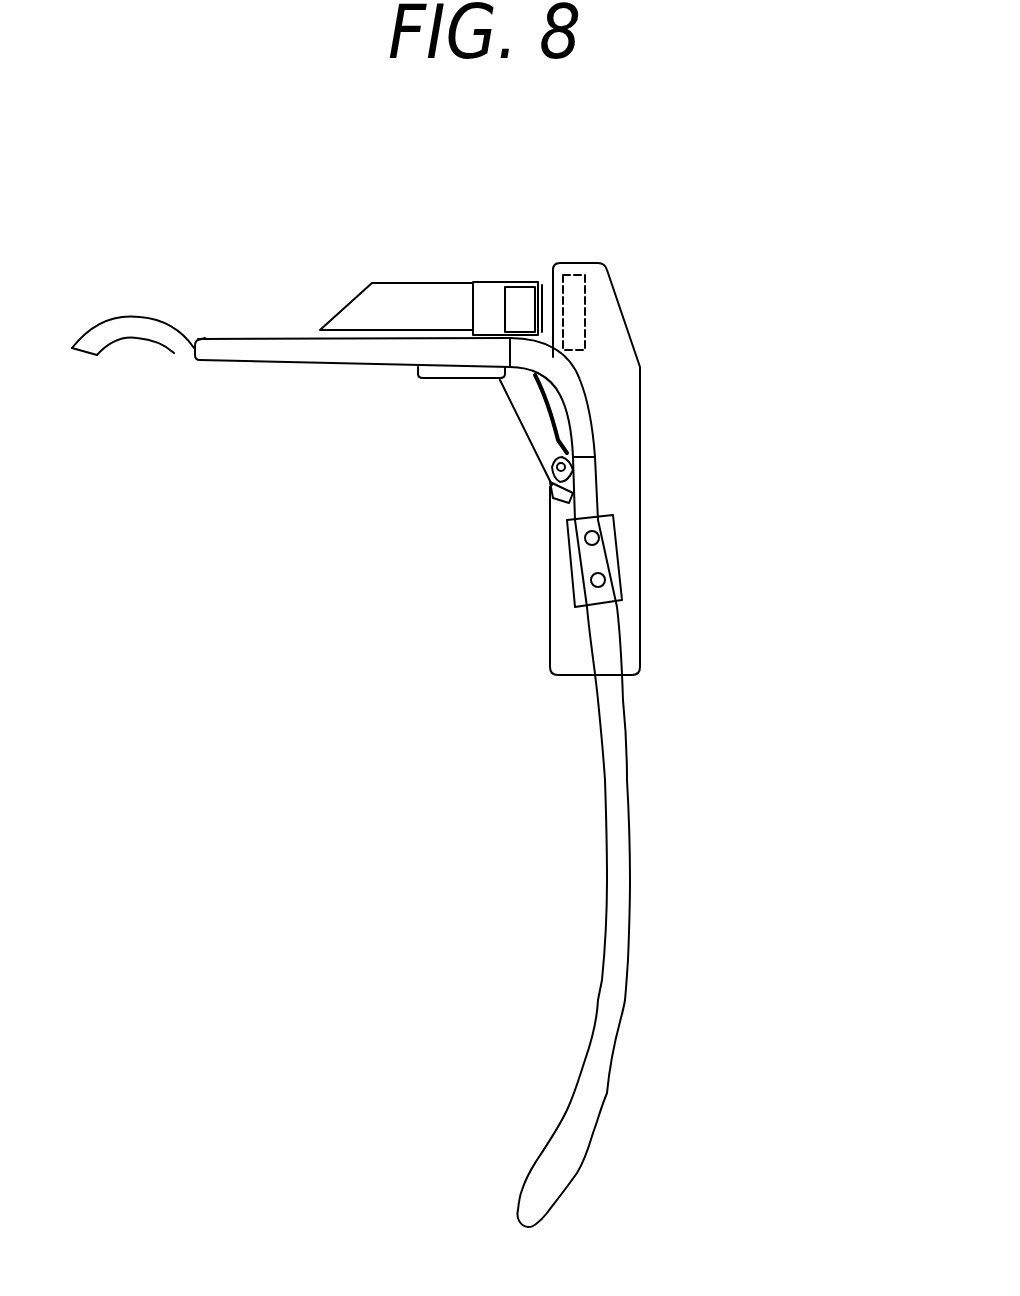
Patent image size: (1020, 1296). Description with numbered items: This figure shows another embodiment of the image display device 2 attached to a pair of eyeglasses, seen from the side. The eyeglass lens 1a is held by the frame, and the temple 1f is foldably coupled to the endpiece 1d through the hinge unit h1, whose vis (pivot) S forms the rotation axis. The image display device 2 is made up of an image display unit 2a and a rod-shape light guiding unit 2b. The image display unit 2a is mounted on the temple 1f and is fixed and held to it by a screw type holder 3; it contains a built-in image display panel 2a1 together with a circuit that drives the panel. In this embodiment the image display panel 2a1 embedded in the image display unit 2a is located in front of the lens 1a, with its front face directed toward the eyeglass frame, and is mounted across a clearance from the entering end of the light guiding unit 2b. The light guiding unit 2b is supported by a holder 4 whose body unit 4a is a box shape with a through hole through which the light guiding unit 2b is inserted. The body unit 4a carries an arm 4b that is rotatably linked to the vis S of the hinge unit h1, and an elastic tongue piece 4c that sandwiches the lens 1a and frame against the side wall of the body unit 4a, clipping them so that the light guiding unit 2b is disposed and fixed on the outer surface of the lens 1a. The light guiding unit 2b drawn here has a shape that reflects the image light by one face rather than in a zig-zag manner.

The lens 1a is at (327, 355).
The endpiece 1d is at (545, 383).
The temple 1f is at (617, 863).
The image display device 2 is at (647, 365).
The image display unit 2a is at (623, 497).
The image display panel 2a1 is at (575, 303).
The light guiding unit 2b is at (407, 300).
The screw type holder 3 is at (572, 578).
The holder 4 is at (523, 278).
The body unit 4a is at (488, 293).
The arm 4b is at (541, 436).
The elastic tongue piece 4c is at (443, 380).
The vis (pivot) S is at (550, 487).
The hinge unit h1 is at (600, 453).